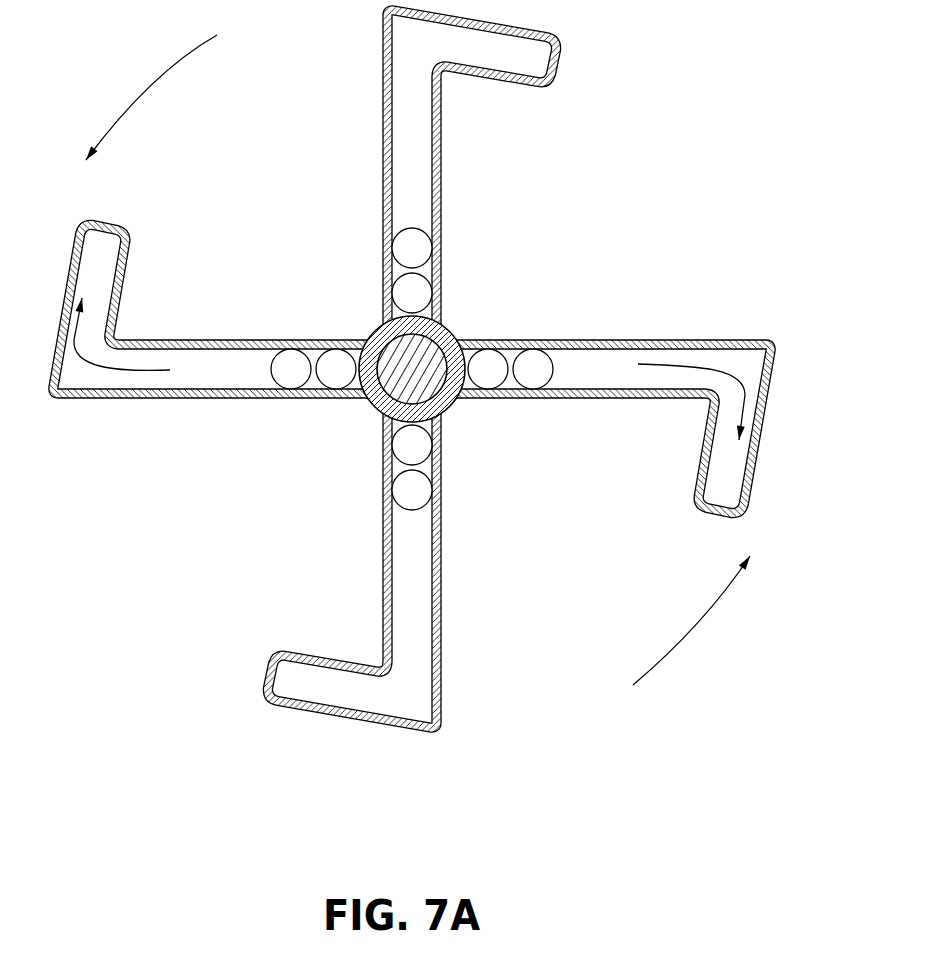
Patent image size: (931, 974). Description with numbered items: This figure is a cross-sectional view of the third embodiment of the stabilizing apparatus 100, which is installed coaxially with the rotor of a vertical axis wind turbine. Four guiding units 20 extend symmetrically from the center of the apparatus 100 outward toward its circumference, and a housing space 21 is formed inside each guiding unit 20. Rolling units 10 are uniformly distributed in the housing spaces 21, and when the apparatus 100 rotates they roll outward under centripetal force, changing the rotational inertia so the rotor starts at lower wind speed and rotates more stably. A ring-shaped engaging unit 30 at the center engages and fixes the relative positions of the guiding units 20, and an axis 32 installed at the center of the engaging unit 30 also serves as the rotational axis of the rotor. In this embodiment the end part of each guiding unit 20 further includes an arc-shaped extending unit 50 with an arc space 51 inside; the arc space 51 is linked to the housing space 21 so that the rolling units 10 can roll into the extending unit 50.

The apparatus 100 is at (650, 146).
The guiding unit 20 is at (385, 187).
The housing space 21 is at (680, 357).
The rolling unit 10 is at (533, 370).
The engaging unit 30 is at (376, 333).
The axis 32 is at (412, 385).
The extending unit 50 is at (757, 483).
The arc space 51 is at (720, 475).